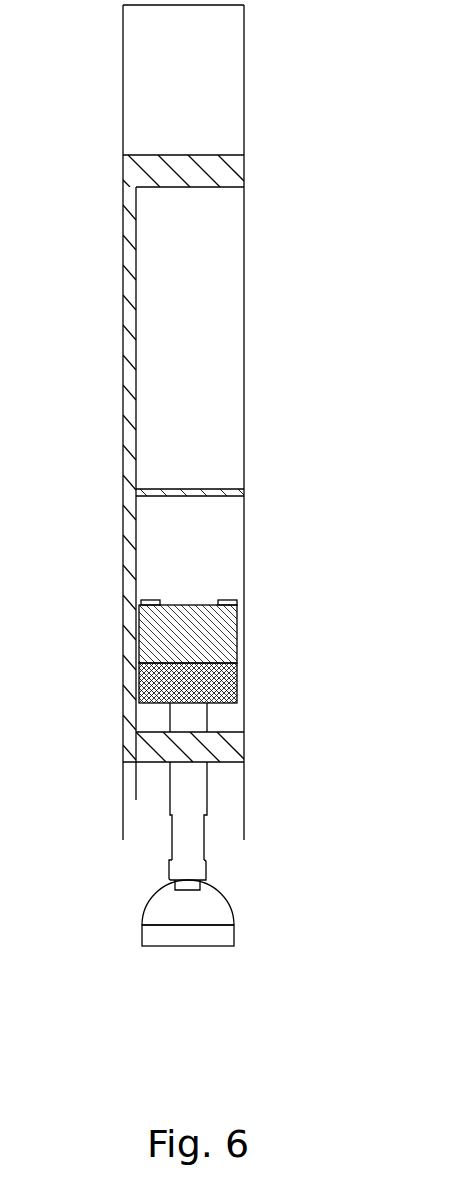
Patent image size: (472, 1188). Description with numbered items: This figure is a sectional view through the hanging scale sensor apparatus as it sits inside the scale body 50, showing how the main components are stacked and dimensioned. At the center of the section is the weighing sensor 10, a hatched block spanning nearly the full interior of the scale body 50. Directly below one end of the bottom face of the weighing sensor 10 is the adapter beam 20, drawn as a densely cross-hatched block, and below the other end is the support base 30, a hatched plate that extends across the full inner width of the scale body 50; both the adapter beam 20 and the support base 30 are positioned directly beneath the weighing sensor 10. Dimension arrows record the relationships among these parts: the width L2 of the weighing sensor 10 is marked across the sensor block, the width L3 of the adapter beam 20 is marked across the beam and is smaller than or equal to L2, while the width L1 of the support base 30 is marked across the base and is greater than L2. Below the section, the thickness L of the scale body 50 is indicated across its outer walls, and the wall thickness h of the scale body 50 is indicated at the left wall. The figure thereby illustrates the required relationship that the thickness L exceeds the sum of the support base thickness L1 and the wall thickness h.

The scale body 50 is at (127, 423).
The weighing sensor 10 is at (230, 607).
The adapter beam 20 is at (236, 672).
The support base 30 is at (233, 742).
The width of the support base L1 is at (136, 757).
The width of the weighing sensor L2 is at (139, 632).
The width of the adapter beam L3 is at (139, 690).
The thickness of the scale body L is at (123, 827).
The wall thickness of the scale body h is at (136, 786).